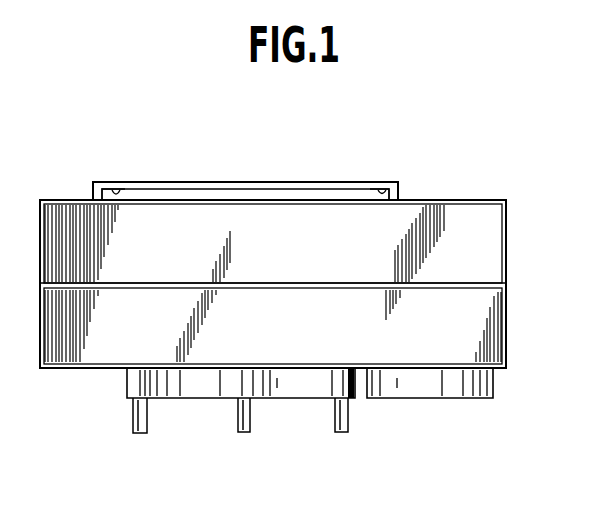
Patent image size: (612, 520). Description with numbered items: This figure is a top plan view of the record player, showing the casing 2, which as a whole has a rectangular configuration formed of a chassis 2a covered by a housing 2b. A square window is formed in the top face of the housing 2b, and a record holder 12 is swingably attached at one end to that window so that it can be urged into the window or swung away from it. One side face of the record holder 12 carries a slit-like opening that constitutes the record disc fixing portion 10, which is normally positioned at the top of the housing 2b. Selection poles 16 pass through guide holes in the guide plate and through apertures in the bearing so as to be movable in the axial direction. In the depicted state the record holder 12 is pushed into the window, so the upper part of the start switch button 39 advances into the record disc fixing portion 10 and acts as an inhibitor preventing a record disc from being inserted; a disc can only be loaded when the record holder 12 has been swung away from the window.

The casing 2 is at (509, 213).
The chassis 2a is at (509, 340).
The housing 2b is at (509, 270).
The record disc fixing portion 10 is at (382, 193).
The record holder 12 is at (283, 186).
The selection pole 16 is at (140, 434).
The start switch button 39 is at (118, 193).